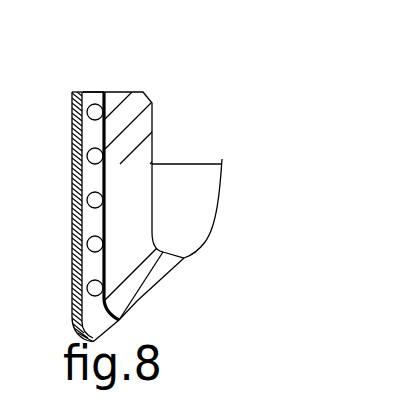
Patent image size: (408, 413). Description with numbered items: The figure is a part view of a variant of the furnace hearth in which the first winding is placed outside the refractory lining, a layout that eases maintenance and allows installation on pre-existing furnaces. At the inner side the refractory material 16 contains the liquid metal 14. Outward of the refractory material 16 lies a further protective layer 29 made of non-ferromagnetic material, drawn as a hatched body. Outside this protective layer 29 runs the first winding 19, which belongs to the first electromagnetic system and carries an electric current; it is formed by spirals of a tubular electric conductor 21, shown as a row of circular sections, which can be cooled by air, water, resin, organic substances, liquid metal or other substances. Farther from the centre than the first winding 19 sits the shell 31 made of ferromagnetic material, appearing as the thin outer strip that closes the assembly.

The liquid metal 14 is at (182, 212).
The refractory material 16 is at (146, 283).
The first winding 19 is at (93, 88).
The tubular electric conductor 21 is at (87, 204).
The protective layer 29 is at (138, 101).
The shell 31 is at (75, 130).